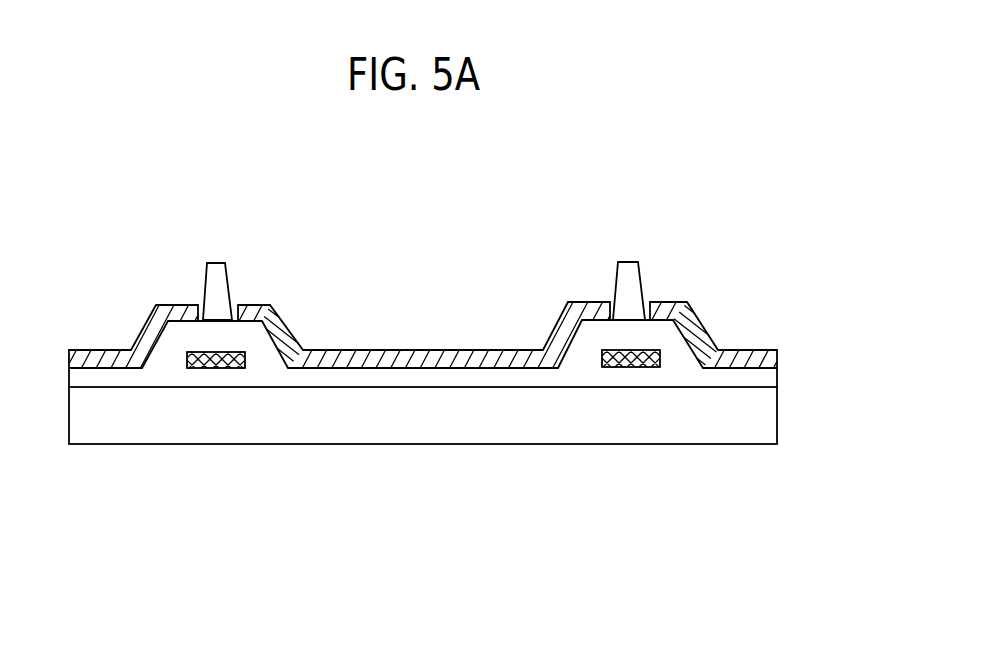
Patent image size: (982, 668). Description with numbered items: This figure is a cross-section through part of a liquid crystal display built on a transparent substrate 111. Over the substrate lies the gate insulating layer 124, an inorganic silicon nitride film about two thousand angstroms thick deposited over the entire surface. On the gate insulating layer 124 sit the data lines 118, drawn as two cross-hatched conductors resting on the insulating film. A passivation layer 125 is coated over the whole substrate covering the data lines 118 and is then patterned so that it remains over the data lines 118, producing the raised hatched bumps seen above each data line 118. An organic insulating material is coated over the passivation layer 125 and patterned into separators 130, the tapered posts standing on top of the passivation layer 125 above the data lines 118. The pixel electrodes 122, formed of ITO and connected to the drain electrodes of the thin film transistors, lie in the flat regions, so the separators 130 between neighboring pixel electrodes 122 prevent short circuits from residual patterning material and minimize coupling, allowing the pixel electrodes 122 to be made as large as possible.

The transparent substrate 111 is at (772, 415).
The gate insulating layer 124 is at (777, 375).
The pixel electrode 122 is at (775, 345).
The passivation layer 125 is at (677, 333).
The data line 118 is at (630, 367).
The separator 130 is at (635, 273).